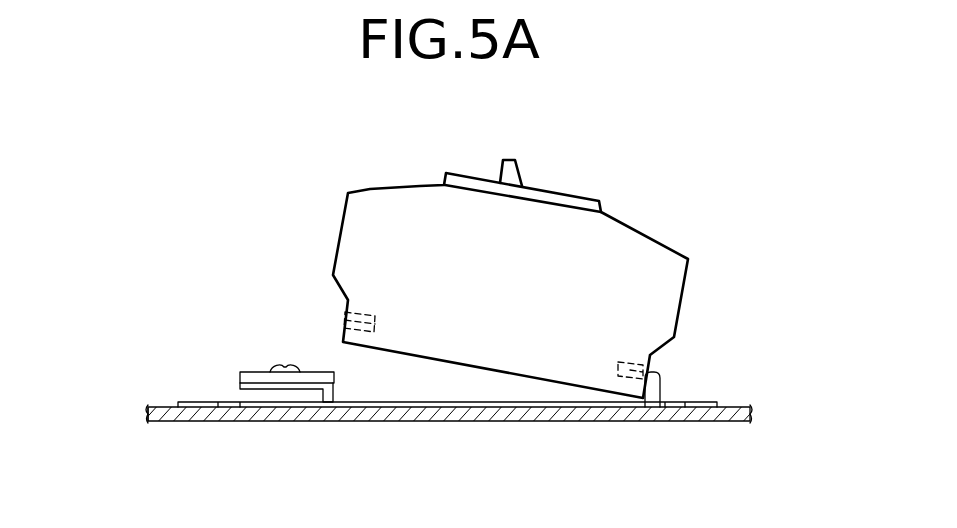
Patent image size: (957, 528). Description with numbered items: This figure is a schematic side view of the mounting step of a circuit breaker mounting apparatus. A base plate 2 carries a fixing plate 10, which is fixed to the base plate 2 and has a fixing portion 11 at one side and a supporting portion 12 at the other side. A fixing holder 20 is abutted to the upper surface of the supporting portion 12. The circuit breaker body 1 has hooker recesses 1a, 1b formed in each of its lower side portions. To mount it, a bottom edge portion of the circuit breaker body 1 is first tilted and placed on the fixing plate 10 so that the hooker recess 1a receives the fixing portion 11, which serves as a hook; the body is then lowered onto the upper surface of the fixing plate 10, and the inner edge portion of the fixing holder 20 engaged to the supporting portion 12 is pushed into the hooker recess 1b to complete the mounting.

The circuit breaker body 1 is at (570, 225).
The hooker recess 1a is at (623, 360).
The hooker recess 1b is at (345, 318).
The base plate 2 is at (148, 410).
The fixing plate 10 is at (525, 408).
The fixing portion 11 is at (657, 390).
The supporting portion 12 is at (265, 390).
The fixing holder 20 is at (240, 376).